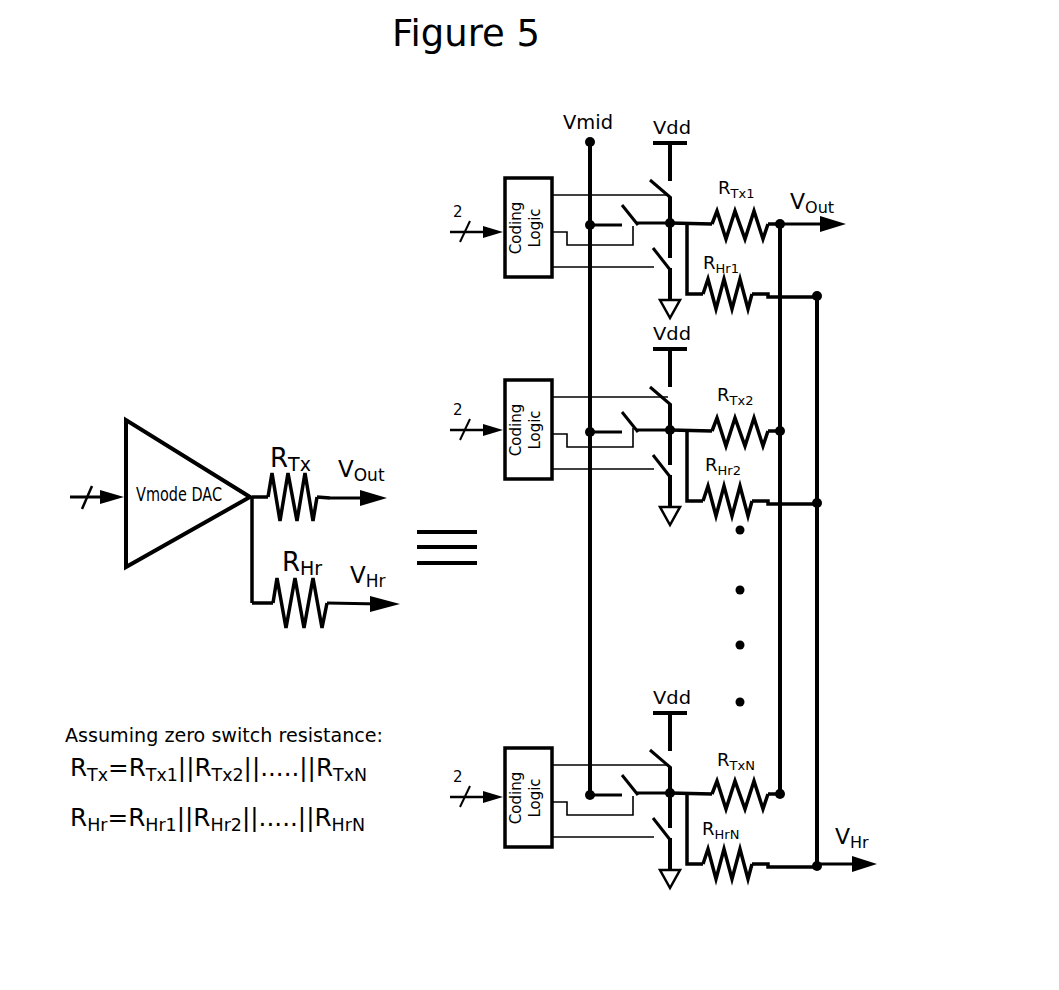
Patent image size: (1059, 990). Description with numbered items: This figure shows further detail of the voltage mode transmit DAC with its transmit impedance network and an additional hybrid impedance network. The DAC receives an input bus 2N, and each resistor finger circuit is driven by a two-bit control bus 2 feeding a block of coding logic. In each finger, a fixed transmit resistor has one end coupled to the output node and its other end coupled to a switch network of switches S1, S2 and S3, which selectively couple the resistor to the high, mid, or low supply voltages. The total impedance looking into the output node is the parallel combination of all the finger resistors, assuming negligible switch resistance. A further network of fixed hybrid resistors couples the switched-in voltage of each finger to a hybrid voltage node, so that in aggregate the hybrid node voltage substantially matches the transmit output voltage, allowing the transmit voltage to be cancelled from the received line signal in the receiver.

The 2-bit coding logic control bus 2 is at (476, 505).
The 2N-bit DAC input bus 2N is at (97, 488).
The switch S1 is at (674, 187).
The switch S2 is at (628, 216).
The switch S3 is at (658, 254).